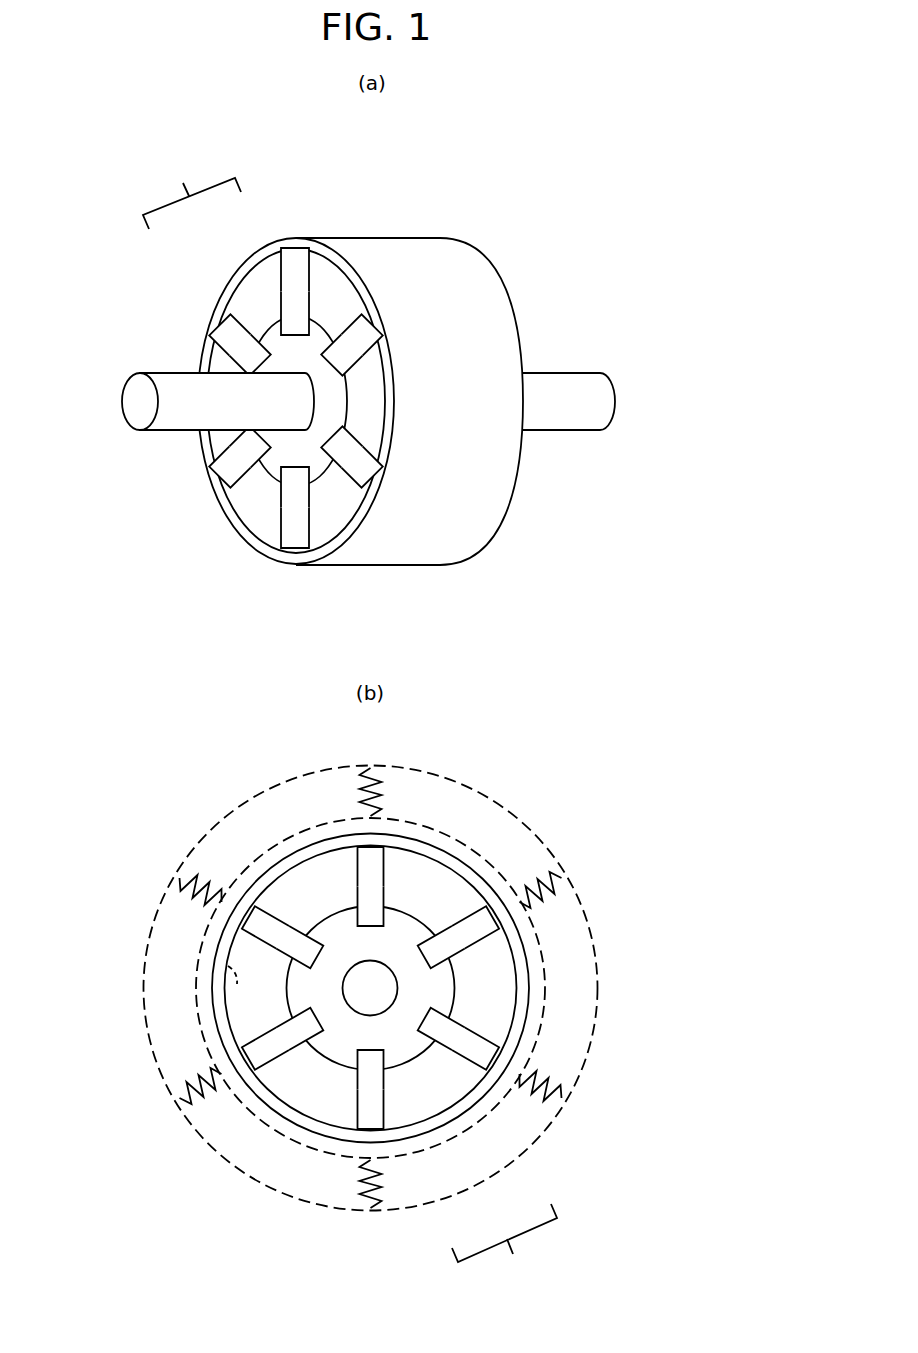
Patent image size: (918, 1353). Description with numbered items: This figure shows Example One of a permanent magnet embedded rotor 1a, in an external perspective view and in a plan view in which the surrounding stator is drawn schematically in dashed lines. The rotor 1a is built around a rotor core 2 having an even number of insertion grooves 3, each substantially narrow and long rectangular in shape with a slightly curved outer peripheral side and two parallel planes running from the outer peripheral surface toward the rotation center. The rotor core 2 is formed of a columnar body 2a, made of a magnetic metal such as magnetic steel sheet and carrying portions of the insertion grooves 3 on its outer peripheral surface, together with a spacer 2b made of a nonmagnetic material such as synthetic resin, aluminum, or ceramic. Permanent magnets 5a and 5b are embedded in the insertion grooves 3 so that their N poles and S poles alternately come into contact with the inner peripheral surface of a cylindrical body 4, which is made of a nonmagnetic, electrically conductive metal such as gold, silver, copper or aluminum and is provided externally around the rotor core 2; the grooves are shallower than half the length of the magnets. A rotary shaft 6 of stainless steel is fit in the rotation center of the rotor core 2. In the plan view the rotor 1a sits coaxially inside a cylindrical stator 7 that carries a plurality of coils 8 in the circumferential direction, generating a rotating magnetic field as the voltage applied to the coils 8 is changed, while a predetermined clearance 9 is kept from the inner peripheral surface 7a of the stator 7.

The rotor 1a is at (573, 283).
The rotor core 2 is at (350, 723).
The columnar body 2a is at (265, 336).
The spacer 2b is at (258, 273).
The insertion groove 3 is at (291, 502).
The cylindrical body 4 is at (288, 241).
The permanent magnet 5a is at (312, 280).
The permanent magnet 5b is at (229, 349).
The rotary shaft 6 is at (560, 433).
The stator 7 is at (499, 800).
The inner peripheral surface 7a is at (230, 968).
The coil 8 is at (204, 1108).
The clearance 9 is at (497, 968).